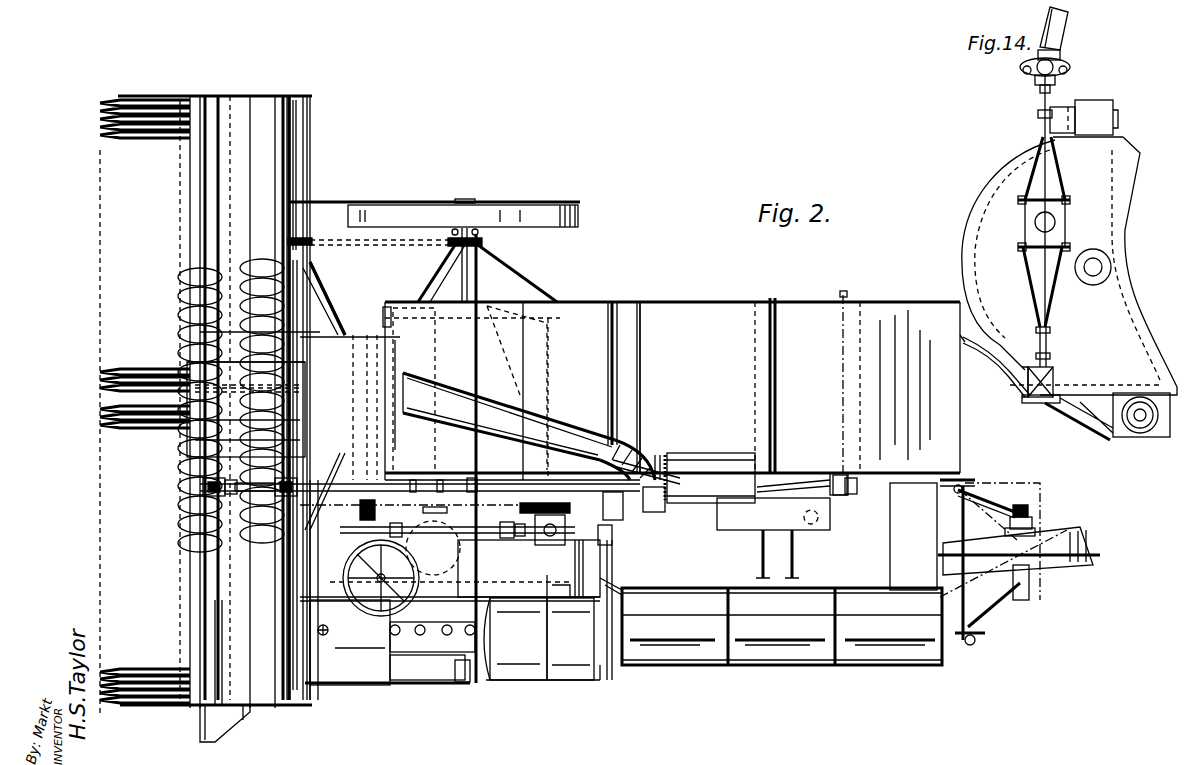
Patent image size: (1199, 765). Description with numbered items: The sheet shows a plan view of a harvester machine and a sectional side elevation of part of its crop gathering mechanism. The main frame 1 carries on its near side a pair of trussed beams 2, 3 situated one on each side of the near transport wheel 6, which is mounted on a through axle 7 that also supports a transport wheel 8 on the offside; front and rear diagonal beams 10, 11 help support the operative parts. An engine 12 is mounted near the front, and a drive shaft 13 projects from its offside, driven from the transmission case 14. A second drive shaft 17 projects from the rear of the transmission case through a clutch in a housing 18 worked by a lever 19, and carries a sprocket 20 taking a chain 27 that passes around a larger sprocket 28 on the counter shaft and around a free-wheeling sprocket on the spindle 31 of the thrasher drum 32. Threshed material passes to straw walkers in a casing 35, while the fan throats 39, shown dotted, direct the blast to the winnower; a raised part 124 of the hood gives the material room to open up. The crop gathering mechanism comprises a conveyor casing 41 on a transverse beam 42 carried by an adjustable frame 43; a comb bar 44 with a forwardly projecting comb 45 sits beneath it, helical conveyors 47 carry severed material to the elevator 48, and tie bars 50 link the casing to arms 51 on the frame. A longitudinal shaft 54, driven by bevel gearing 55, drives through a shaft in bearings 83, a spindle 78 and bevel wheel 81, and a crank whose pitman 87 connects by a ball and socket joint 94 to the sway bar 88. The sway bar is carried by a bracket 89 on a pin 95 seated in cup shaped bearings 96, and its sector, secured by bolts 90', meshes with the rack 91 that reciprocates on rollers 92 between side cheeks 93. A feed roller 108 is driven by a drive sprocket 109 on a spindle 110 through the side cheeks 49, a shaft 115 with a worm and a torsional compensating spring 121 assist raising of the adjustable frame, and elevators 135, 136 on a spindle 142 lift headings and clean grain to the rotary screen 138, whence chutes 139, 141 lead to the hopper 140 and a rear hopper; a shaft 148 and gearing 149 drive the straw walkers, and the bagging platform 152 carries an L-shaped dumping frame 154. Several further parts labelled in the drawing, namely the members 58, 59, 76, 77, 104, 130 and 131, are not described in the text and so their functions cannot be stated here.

In FIG. 2, the main frame 1 is at (618, 647).
In FIG. 2, the trussed beam 2 is at (952, 633).
In FIG. 2, the trussed beam 3 is at (963, 480).
In FIG. 2, the near transport wheel 6 is at (529, 568).
In FIG. 2, the through axle 7 is at (463, 280).
In FIG. 2, the transport wheel 8 is at (463, 216).
In FIG. 2, the front diagonal beam 10 is at (425, 295).
In FIG. 2, the rear diagonal beam 11 is at (537, 275).
In FIG. 2, the engine 12 is at (392, 642).
In FIG. 2, the drive shaft 13 is at (542, 639).
In FIG. 2, the transmission case 14 is at (570, 639).
In FIG. 2, the second drive shaft 17 is at (573, 565).
In FIG. 2, the clutch housing 18 is at (602, 580).
In FIG. 2, the clutch lever 19 is at (610, 590).
In FIG. 2, the sprocket 20 is at (600, 537).
In FIG. 2, the chain 27 is at (528, 527).
In FIG. 2, the larger sprocket 28 is at (517, 497).
In FIG. 2, the spindle 31 is at (440, 490).
In FIG. 2, the thrasher drum 32 is at (410, 395).
In FIG. 2, the casing 35 is at (668, 387).
In FIG. 2, the fan throat 39 is at (505, 327).
In FIG. 2, the conveyor casing 41 is at (307, 172).
In FIG. 14, the conveyor casing 41 is at (1059, 221).
In FIG. 14, the transverse beam 42 is at (1147, 425).
In FIG. 2, the adjustable frame 43 is at (323, 290).
In FIG. 14, the comb bar 44 is at (1090, 410).
In FIG. 2, the comb 45 is at (135, 670).
In FIG. 14, the comb 45 is at (970, 343).
In FIG. 2, the helical conveyor 47 is at (190, 315).
In FIG. 14, the helical conveyor 47 is at (1132, 200).
In FIG. 2, the elevator 48 is at (262, 389).
In FIG. 2, the side cheek 49 is at (333, 333).
In FIG. 2, the tie bar 50 is at (355, 205).
In FIG. 2, the arm 51 is at (470, 200).
In FIG. 2, the longitudinal shaft 54 is at (553, 477).
In FIG. 2, the bevel gearing 55 is at (627, 460).
In FIG. 2, the stop 58 is at (383, 313).
In FIG. 2, the guide 59 is at (282, 650).
In FIG. 14, the guide 59 is at (1084, 117).
In FIG. 2, the tine bar 76 is at (203, 420).
In FIG. 2, the tine bar 77 is at (190, 440).
In FIG. 2, the spindle 78 is at (203, 487).
In FIG. 2, the bevel wheel 81 is at (223, 517).
In FIG. 2, the bearing 83 is at (200, 507).
In FIG. 14, the pitman 87 is at (1060, 36).
In FIG. 14, the sway bar 88 is at (1032, 287).
In FIG. 14, the bracket 89 is at (1055, 180).
In FIG. 14, the bolt 90' is at (1064, 347).
In FIG. 14, the rack 91 is at (1030, 393).
In FIG. 14, the roller 92 is at (1037, 403).
In FIG. 14, the side cheek 93 is at (1027, 373).
In FIG. 14, the ball and socket joint 94 is at (1055, 67).
In FIG. 14, the pin 95 is at (1055, 222).
In FIG. 14, the cup shaped bearing 96 is at (1062, 240).
In FIG. 2, the tines 104 is at (100, 405).
In FIG. 2, the feed roller 108 is at (370, 352).
In FIG. 2, the drive sprocket 109 is at (322, 590).
In FIG. 2, the spindle 110 is at (358, 412).
In FIG. 2, the longitudinally disposed shaft 115 is at (401, 568).
In FIG. 2, the torsional compensating spring 121 is at (384, 510).
In FIG. 2, the raised part 124 is at (603, 325).
In FIG. 2, the shaft hanger 130 is at (423, 497).
In FIG. 2, the chute 131 is at (509, 416).
In FIG. 2, the elevator 135 is at (657, 513).
In FIG. 2, the elevator 136 is at (650, 467).
In FIG. 2, the rotary screen 138 is at (470, 478).
In FIG. 2, the chute 139 is at (777, 477).
In FIG. 2, the hopper 140 is at (773, 536).
In FIG. 2, the chute 141 is at (822, 476).
In FIG. 2, the spindle 142 is at (612, 503).
In FIG. 2, the shaft 148 is at (817, 480).
In FIG. 2, the gearing 149 is at (833, 495).
In FIG. 2, the bagging platform 152 is at (782, 613).
In FIG. 2, the dumping frame 154 is at (732, 607).